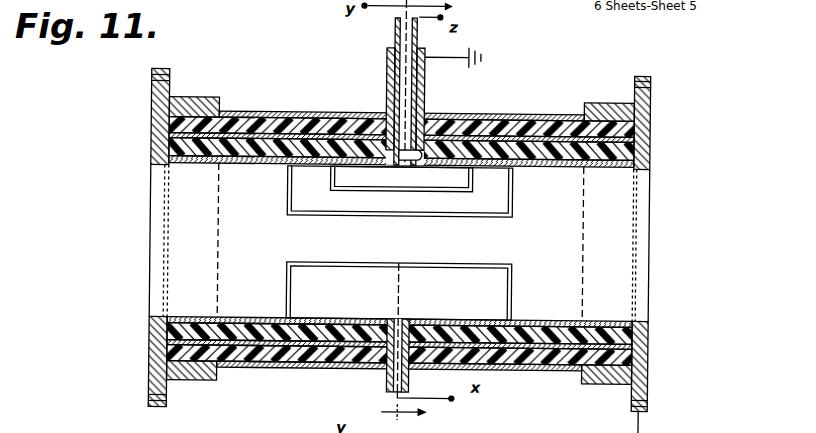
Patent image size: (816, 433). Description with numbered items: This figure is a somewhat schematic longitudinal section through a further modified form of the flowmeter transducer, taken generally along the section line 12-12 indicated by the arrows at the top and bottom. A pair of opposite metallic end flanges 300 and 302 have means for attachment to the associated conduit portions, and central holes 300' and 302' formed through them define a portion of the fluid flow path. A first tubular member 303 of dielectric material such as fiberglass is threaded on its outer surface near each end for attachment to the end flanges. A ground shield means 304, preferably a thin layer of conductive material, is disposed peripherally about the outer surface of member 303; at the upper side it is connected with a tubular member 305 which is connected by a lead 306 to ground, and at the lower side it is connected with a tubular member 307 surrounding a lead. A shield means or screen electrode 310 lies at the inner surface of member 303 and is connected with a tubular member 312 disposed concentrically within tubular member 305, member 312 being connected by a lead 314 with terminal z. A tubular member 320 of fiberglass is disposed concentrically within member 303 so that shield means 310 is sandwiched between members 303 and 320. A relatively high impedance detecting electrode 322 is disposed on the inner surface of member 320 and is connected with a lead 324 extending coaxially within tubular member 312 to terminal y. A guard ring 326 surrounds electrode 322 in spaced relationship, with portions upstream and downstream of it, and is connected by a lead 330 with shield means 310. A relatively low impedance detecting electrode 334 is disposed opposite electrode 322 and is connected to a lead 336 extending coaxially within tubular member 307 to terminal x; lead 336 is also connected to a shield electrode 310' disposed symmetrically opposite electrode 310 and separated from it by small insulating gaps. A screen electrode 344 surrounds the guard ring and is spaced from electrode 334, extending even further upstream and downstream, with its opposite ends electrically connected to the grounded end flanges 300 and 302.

The section line 12- 12 is at (439, 213).
The end flange 300 is at (161, 116).
The central hole 300' is at (156, 276).
The end flange 302 is at (672, 123).
The central hole 302' is at (669, 301).
The first tubular member 303 is at (634, 124).
The ground shield means 304 is at (542, 114).
The tubular member 305 is at (385, 100).
The lead 306 is at (437, 58).
The tubular member 307 is at (388, 383).
The shield means or screen electrode 310 is at (402, 117).
The shield electrode 310' is at (399, 361).
The tubular member 312 is at (418, 120).
The lead 314 is at (422, 18).
The tubular member 320 is at (567, 333).
The high impedance detecting electrode 322 is at (356, 165).
The lead 324 is at (417, 163).
The guard ring 326 is at (480, 203).
The lead 330 is at (519, 136).
The low impedance detecting electrode 334 is at (360, 320).
The lead 336 is at (398, 320).
The screen electrode 344 is at (238, 166).